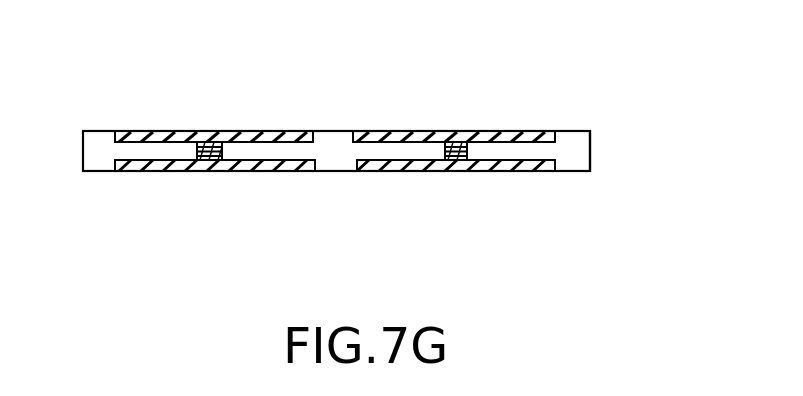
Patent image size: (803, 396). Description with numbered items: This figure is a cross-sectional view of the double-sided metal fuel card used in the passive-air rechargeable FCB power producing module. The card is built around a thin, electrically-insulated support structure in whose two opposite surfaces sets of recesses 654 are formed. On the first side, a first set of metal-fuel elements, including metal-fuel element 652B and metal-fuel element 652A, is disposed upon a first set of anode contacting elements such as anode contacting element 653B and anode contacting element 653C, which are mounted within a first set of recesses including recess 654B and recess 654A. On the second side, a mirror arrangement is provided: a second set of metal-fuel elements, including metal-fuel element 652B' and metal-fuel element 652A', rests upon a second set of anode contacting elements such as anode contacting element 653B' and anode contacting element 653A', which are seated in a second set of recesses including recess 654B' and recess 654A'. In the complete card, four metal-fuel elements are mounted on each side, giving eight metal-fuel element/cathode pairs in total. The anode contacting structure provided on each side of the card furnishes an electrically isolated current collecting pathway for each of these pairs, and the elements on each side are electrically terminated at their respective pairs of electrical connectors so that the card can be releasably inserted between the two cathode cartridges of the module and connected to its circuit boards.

The recesses 654 is at (572, 144).
The recess 654A is at (597, 93).
The recess 654A' is at (610, 198).
The recess 654B is at (320, 83).
The recess 654B' is at (328, 212).
The metal-fuel element 652A is at (454, 89).
The metal-fuel element 652A' is at (456, 215).
The metal-fuel element 652B is at (214, 89).
The metal-fuel element 652B' is at (194, 215).
The anode contacting element 653B is at (242, 120).
The anode contacting element 653B' is at (230, 206).
The anode contacting element 653C is at (456, 143).
The anode contacting element 653A' is at (503, 194).